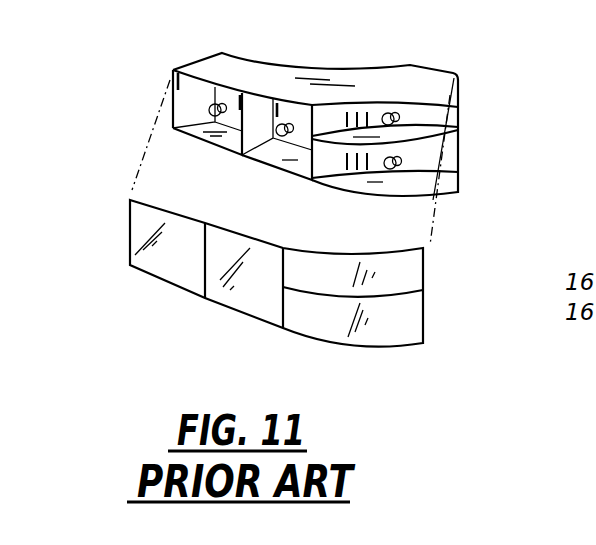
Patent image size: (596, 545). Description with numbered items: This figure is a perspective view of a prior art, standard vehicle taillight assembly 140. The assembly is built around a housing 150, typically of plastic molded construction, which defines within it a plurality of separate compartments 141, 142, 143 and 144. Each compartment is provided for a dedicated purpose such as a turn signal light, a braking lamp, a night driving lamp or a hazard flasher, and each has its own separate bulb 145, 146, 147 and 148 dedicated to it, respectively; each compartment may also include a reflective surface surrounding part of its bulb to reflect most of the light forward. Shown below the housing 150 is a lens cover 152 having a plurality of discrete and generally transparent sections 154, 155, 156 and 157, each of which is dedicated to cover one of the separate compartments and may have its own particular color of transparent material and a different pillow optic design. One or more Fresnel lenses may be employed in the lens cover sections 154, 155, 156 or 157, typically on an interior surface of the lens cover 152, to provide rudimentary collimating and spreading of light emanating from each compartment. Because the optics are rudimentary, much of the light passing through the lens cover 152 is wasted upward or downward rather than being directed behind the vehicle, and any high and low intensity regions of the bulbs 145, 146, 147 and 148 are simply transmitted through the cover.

The vehicle taillight assembly 140 is at (494, 75).
The housing 150 is at (446, 70).
The compartment 141 is at (212, 136).
The compartment 142 is at (271, 166).
The compartment 143 is at (464, 110).
The compartment 144 is at (463, 168).
The bulb 145 is at (209, 109).
The bulb 146 is at (278, 137).
The bulb 147 is at (385, 124).
The bulb 148 is at (390, 170).
The lens cover 152 is at (433, 287).
The lens cover section 154 is at (143, 252).
The lens cover section 155 is at (220, 297).
The lens cover section 156 is at (392, 270).
The lens cover section 157 is at (360, 335).